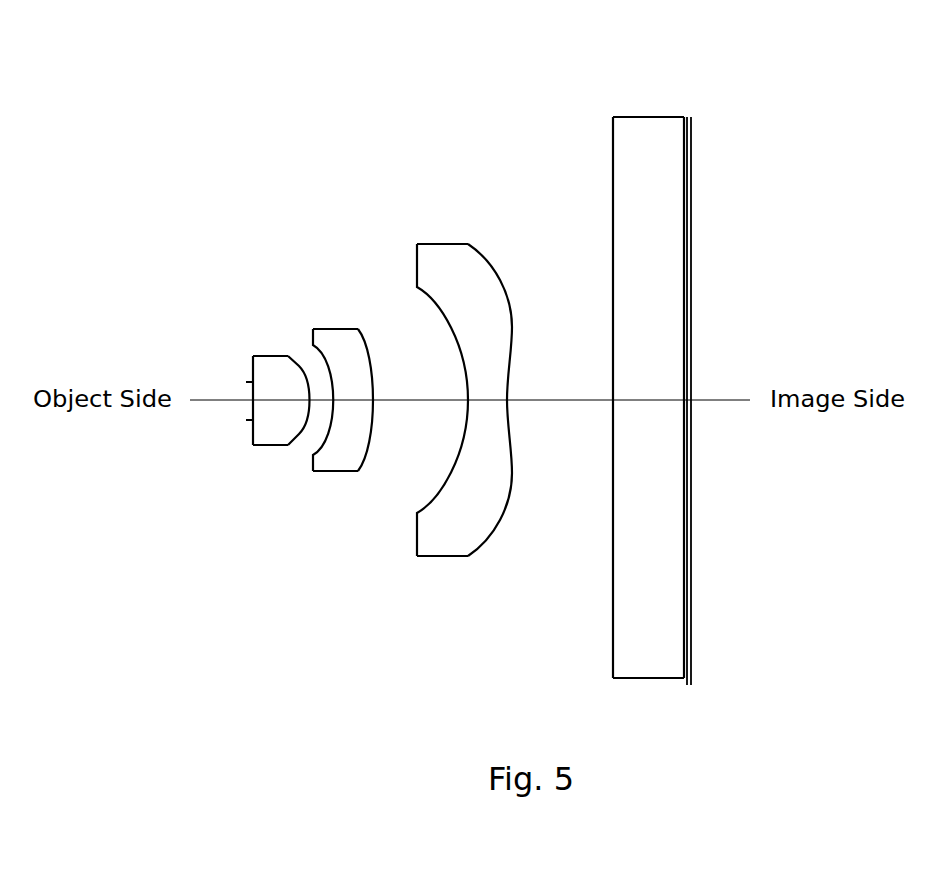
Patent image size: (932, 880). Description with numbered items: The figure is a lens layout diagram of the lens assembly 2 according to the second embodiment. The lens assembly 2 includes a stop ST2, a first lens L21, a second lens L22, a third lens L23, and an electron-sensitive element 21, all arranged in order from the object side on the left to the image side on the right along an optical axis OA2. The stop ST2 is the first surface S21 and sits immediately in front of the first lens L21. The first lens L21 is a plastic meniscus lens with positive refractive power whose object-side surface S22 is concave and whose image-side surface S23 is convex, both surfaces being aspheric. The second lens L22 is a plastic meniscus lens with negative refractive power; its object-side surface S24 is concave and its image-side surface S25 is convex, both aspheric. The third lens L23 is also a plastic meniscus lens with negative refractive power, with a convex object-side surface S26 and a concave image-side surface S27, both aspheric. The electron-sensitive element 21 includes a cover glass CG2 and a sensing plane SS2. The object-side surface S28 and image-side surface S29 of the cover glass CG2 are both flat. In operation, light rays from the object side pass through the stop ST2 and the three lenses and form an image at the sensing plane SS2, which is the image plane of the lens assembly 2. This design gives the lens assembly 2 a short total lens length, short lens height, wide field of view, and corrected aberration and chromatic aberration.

The lens assembly 2 is at (165, 143).
The electron-sensitive element 21 is at (850, 37).
The optical axis OA2 is at (240, 400).
The stop ST2 is at (214, 396).
The first lens L21 is at (255, 421).
The second lens L22 is at (354, 433).
The third lens L23 is at (481, 407).
The cover glass CG2 is at (683, 407).
The sensing plane SS2 is at (765, 77).
The stop surface S21 is at (247, 420).
The object-side surface of first lens S22 is at (263, 443).
The image-side surface of first lens S23 is at (305, 428).
The object-side surface of second lens S24 is at (327, 425).
The image-side surface of second lens S25 is at (372, 433).
The object-side surface of third lens S26 is at (445, 487).
The image-side surface of third lens S27 is at (510, 488).
The object-side surface of cover glass S28 is at (613, 592).
The image-side surface of cover glass S29 is at (684, 662).